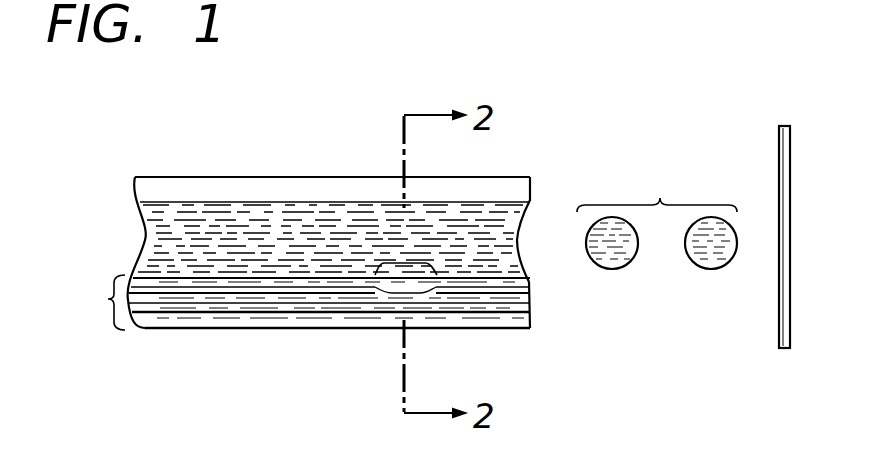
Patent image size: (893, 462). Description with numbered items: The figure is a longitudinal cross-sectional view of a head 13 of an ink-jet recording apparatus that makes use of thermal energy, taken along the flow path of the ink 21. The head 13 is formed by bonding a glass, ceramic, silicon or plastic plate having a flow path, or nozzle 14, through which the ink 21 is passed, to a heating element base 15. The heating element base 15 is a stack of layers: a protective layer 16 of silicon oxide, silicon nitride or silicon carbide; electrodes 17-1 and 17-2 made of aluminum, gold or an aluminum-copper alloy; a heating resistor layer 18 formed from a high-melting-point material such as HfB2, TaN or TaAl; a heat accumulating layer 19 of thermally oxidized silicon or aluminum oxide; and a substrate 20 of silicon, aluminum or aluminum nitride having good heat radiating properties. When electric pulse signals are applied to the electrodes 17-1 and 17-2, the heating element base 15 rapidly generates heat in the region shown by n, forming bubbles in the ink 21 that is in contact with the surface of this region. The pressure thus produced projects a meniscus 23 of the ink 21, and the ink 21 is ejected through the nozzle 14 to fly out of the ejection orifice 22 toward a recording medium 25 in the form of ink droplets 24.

The head 13 is at (218, 177).
The flow path (nozzle) 14 is at (268, 177).
The ink 21 is at (175, 177).
The heat generating region n is at (405, 263).
The meniscus 23 is at (522, 226).
The ejection orifice 22 is at (537, 264).
The ink droplets 24 is at (657, 220).
The recording medium 25 is at (778, 163).
The heating element base 15 is at (103, 302).
The protective layer 16 is at (170, 282).
The electrode 17-1 is at (218, 292).
The electrode 17-2 is at (492, 292).
The heating resistor layer 18 is at (262, 300).
The heat accumulating layer 19 is at (317, 310).
The substrate 20 is at (378, 320).